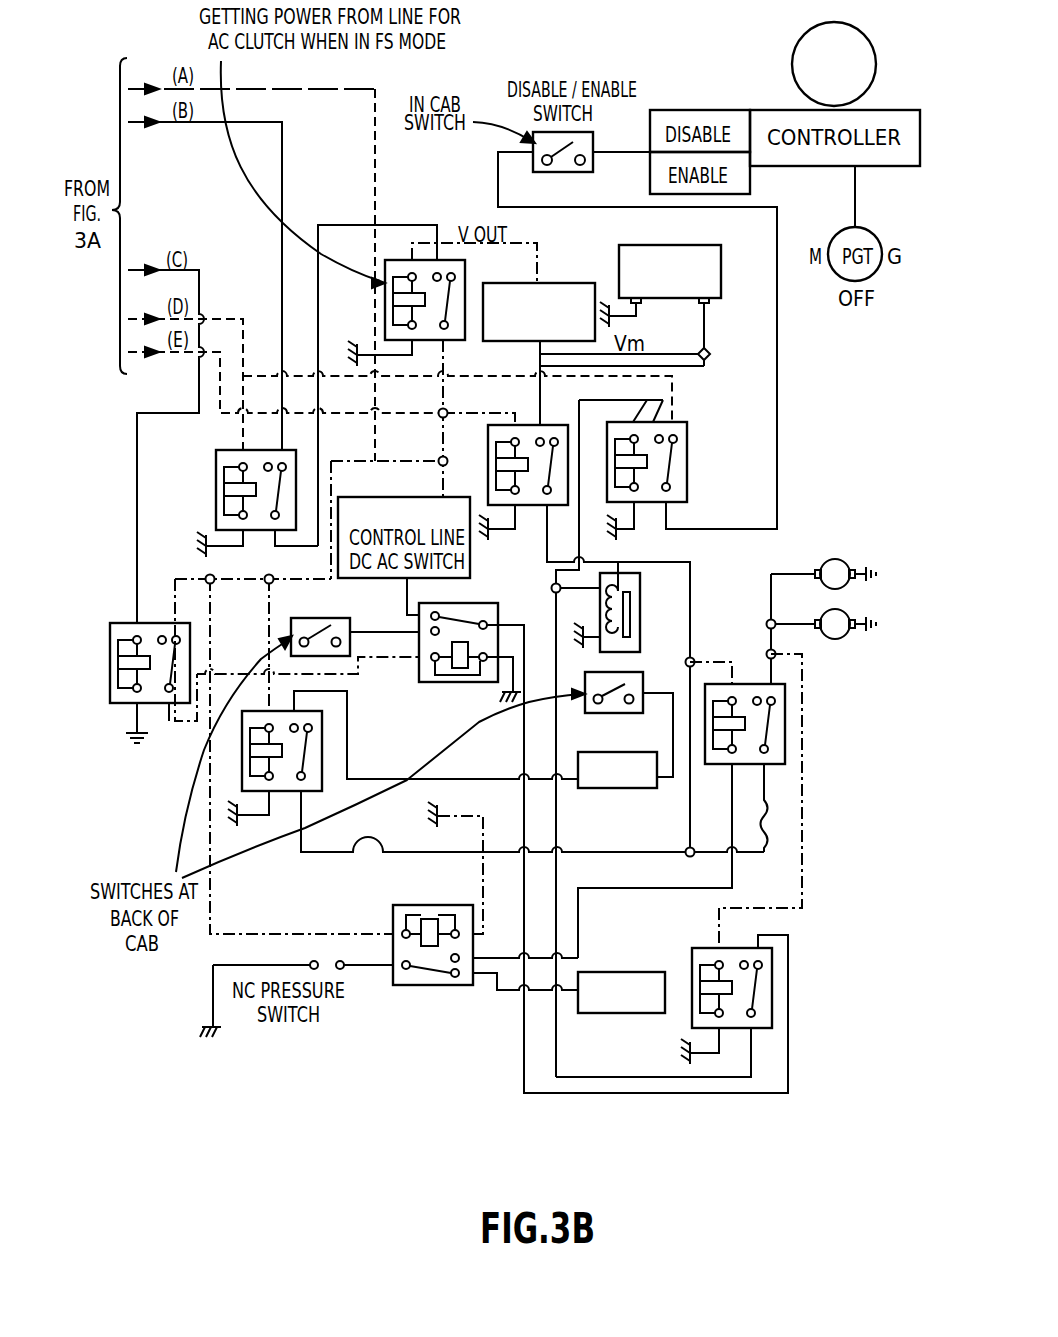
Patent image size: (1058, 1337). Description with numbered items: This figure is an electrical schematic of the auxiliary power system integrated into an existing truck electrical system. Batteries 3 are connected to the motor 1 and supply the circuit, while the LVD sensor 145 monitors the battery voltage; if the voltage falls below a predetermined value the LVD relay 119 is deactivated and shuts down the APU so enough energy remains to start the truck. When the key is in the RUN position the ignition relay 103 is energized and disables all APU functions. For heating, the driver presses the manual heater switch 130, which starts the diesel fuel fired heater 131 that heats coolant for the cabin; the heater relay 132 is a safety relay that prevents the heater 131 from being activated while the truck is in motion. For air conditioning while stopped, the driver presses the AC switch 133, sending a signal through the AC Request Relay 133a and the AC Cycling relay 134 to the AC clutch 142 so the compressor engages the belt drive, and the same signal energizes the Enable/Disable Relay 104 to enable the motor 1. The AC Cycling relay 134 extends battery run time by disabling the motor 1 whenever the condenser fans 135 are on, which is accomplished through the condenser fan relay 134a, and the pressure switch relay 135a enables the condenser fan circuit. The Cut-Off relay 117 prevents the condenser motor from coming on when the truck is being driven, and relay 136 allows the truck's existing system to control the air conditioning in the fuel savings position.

The motor 1 is at (791, 65).
The batteries 3 is at (721, 269).
The ignition relay 103 is at (216, 458).
The Enable/Disable Relay 104 is at (687, 441).
The Cut-Off relay 117 is at (530, 506).
The LVD relay 119 is at (398, 260).
The manual heater switch 130 is at (643, 676).
The heater 131 is at (632, 788).
The heater relay 132 is at (242, 750).
The AC switch 133 is at (291, 628).
The AC Request Relay 133a is at (430, 683).
The AC Cycling relay 134 is at (770, 992).
The condenser fan relay 134a is at (784, 744).
The condenser fans 135 is at (842, 639).
The pressure switch relay 135a is at (416, 985).
The relay 136 is at (137, 623).
The AC clutch 142 is at (619, 560).
The LVD sensor 145 is at (562, 282).